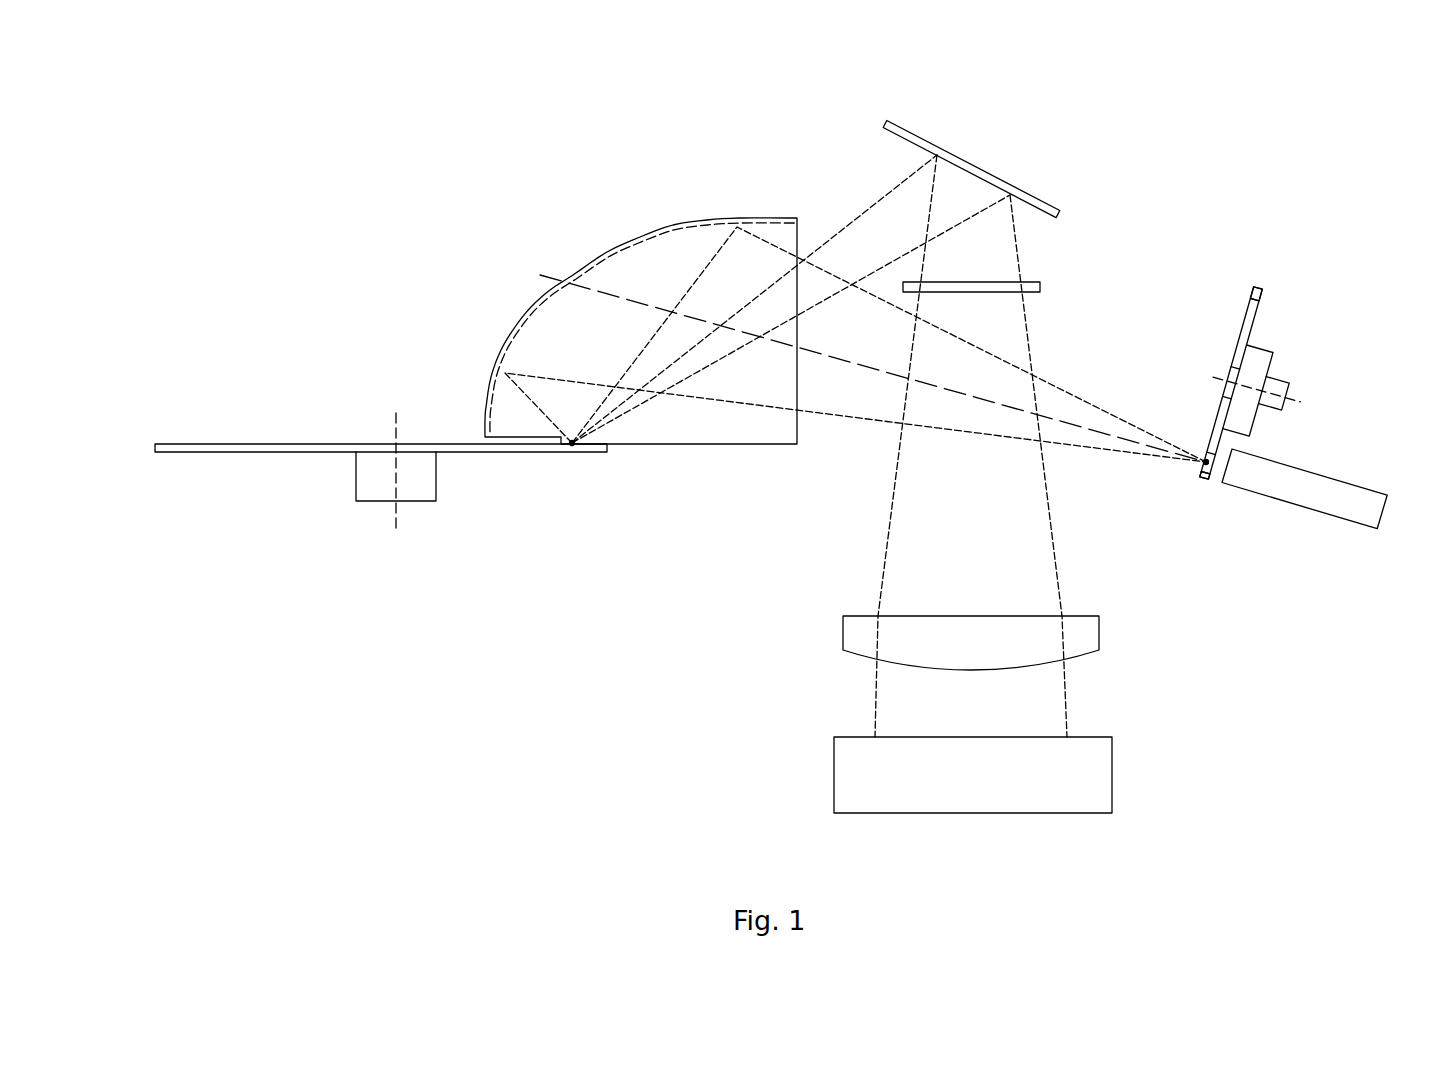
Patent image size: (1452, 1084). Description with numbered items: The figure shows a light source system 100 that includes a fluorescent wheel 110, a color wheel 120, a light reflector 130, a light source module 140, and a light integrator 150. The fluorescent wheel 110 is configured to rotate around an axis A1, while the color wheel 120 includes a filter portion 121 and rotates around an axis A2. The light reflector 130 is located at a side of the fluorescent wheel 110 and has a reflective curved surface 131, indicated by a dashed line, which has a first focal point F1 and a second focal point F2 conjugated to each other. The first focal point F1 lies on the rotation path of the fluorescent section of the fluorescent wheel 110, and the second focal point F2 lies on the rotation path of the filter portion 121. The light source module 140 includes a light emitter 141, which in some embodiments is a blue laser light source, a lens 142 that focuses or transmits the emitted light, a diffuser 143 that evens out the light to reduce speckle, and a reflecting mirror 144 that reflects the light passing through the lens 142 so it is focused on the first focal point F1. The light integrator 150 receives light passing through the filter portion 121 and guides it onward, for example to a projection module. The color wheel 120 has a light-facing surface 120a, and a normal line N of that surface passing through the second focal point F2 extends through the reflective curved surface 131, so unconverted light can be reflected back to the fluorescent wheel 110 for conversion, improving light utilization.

The light source system 100 is at (281, 91).
The fluorescent wheel 110 is at (198, 444).
The color wheel 120 is at (1259, 289).
The light-facing surface 120a is at (1252, 297).
The filter portion 121 is at (1199, 479).
The light reflector 130 is at (588, 265).
The reflective curved surface 131 is at (652, 234).
The light source module 140 is at (997, 143).
The light emitter 141 is at (1113, 780).
The lens 142 is at (1099, 633).
The diffuser 143 is at (1040, 283).
The reflecting mirror 144 is at (1043, 208).
The light integrator 150 is at (1337, 486).
The axis A1 is at (396, 428).
The axis A2 is at (1297, 400).
The first focal point F1 is at (572, 443).
The second focal point F2 is at (1206, 462).
The normal line N is at (540, 275).